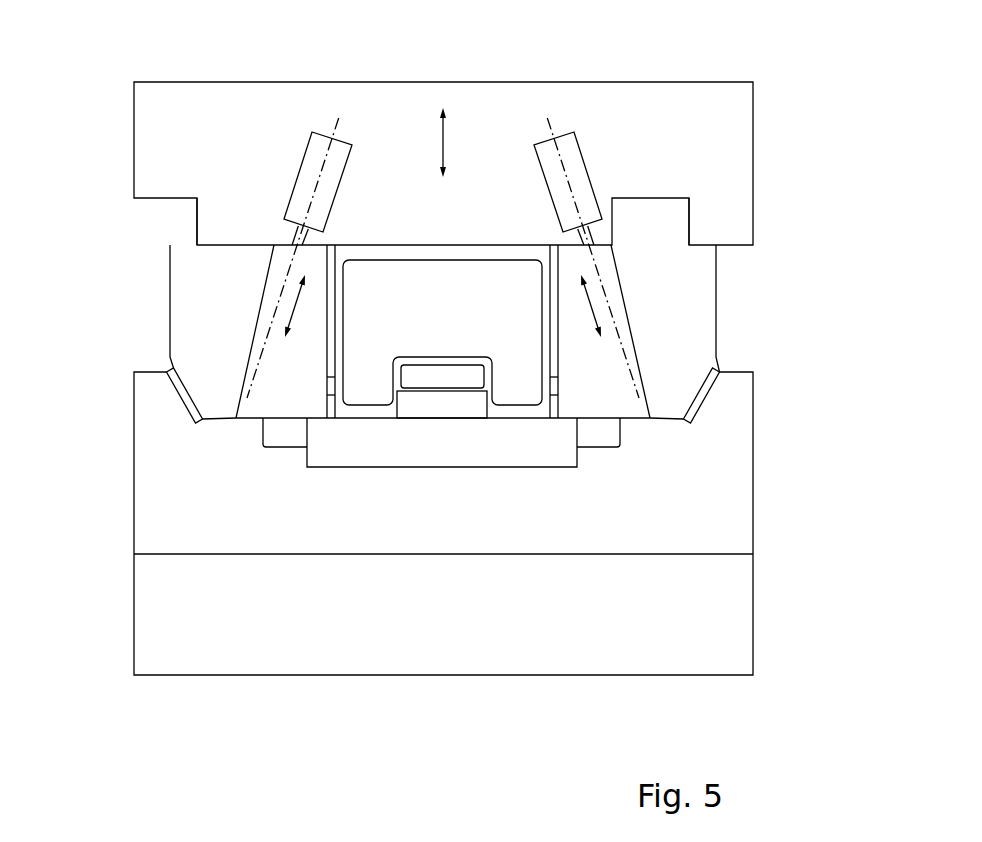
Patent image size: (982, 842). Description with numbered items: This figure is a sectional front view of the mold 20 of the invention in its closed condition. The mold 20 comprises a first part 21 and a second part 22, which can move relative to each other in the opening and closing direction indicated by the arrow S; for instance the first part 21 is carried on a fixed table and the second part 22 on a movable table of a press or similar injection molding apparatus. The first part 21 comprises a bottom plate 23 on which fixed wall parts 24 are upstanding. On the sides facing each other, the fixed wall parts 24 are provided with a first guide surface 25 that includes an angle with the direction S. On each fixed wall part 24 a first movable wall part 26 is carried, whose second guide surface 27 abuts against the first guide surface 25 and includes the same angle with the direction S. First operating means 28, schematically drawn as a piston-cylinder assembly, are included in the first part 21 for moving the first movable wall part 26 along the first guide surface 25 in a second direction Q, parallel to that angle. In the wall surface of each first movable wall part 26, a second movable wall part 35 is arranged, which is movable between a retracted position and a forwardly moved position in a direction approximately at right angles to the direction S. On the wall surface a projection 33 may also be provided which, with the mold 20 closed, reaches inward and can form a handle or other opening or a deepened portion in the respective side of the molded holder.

The mold 20 is at (795, 239).
The first part 21 is at (777, 113).
The second part 22 is at (777, 620).
The bottom plate 23 is at (719, 159).
The fixed wall part 24 is at (200, 309).
The first guide surface 25 is at (267, 274).
The first movable wall part 26 is at (297, 352).
The second guide surface 27 is at (618, 274).
The first operating means 28 is at (443, 211).
The projection 33 is at (466, 375).
The second movable wall part 35 is at (368, 373).